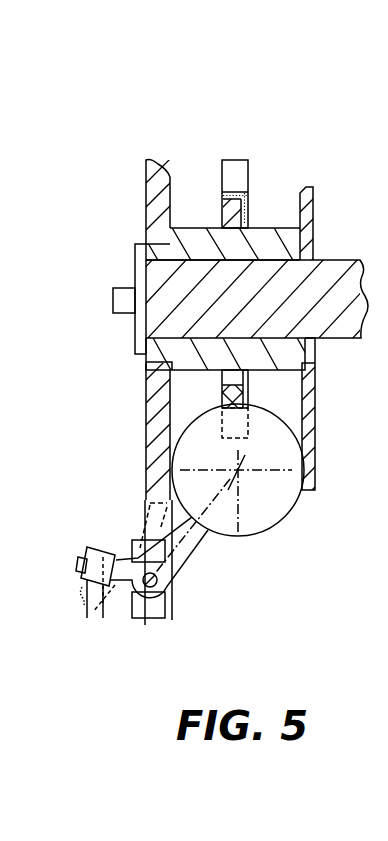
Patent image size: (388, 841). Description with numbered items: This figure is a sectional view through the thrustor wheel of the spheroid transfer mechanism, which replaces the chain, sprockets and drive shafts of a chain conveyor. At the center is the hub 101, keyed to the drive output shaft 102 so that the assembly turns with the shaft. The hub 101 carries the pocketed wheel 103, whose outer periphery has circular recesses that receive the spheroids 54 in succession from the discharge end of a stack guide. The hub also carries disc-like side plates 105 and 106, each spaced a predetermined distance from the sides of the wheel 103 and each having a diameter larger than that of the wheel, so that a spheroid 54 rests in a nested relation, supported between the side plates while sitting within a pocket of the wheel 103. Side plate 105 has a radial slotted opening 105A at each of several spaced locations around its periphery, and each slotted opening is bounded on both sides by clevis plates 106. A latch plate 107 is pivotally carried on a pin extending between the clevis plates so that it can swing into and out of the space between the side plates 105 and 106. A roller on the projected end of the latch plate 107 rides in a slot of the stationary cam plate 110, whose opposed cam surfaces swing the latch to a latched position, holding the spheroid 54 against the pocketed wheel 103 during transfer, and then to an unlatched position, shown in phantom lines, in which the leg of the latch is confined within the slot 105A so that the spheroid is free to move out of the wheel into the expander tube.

The spheroid 54 is at (287, 498).
The hub 101 is at (262, 228).
The drive output shaft 102 is at (333, 250).
The wheel 103 is at (248, 387).
The side plate 105 is at (145, 404).
The radial slotted opening 105A is at (142, 505).
The side plate 106 is at (316, 423).
The latch plate 107 is at (197, 558).
The cam plate 110 is at (87, 617).